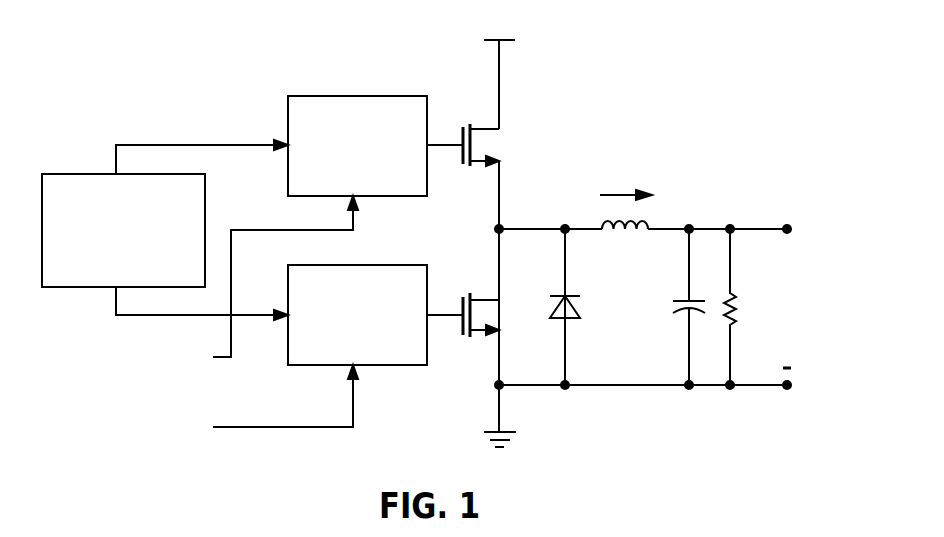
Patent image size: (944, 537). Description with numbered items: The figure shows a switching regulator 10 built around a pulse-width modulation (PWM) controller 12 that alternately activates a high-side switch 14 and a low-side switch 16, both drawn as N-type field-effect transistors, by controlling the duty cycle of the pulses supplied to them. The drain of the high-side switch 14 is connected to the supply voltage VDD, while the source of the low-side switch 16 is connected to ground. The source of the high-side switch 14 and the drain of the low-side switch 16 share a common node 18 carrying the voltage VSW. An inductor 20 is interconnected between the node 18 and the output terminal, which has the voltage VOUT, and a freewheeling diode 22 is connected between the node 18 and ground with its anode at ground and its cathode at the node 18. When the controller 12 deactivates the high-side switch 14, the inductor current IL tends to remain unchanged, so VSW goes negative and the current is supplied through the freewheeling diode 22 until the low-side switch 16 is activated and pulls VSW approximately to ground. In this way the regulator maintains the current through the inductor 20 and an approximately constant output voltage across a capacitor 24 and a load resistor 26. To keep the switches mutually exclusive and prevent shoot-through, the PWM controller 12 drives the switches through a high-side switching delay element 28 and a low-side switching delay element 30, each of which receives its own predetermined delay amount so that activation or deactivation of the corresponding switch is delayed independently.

The switching regulator 10 is at (88, 34).
The PWM controller 12 is at (100, 173).
The high-side switch 14 is at (518, 122).
The low-side switch 16 is at (470, 360).
The node 18 is at (532, 193).
The inductor 20 is at (649, 224).
The freewheeling diode 22 is at (574, 318).
The capacitor 24 is at (684, 300).
The load resistor 26 is at (736, 296).
The high-side switching delay element 28 is at (389, 96).
The low-side switching delay element 30 is at (389, 265).